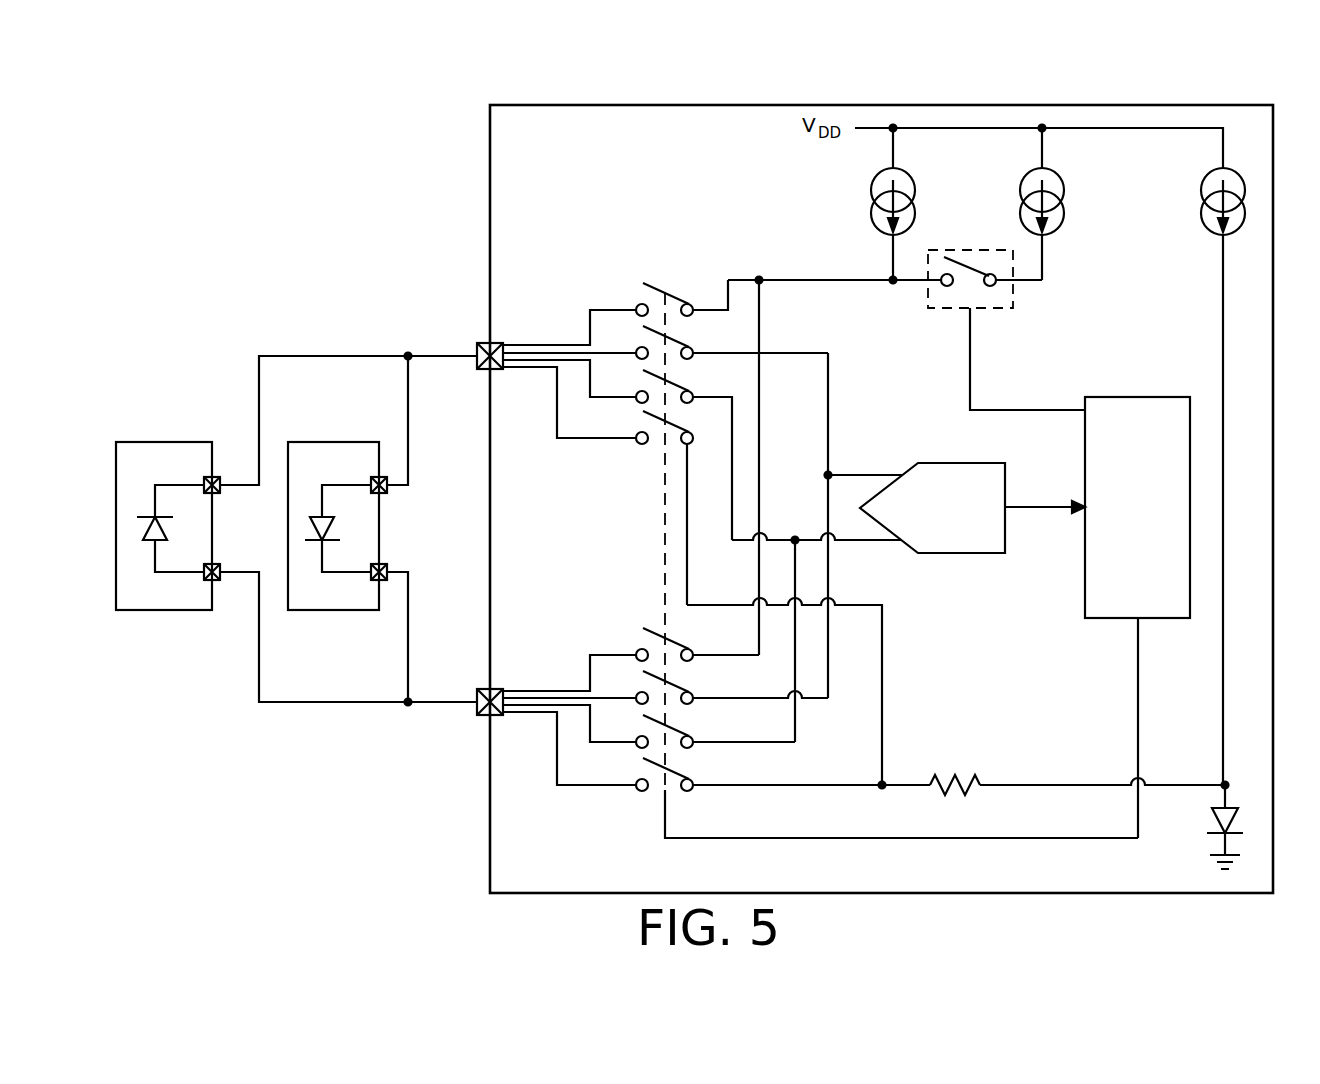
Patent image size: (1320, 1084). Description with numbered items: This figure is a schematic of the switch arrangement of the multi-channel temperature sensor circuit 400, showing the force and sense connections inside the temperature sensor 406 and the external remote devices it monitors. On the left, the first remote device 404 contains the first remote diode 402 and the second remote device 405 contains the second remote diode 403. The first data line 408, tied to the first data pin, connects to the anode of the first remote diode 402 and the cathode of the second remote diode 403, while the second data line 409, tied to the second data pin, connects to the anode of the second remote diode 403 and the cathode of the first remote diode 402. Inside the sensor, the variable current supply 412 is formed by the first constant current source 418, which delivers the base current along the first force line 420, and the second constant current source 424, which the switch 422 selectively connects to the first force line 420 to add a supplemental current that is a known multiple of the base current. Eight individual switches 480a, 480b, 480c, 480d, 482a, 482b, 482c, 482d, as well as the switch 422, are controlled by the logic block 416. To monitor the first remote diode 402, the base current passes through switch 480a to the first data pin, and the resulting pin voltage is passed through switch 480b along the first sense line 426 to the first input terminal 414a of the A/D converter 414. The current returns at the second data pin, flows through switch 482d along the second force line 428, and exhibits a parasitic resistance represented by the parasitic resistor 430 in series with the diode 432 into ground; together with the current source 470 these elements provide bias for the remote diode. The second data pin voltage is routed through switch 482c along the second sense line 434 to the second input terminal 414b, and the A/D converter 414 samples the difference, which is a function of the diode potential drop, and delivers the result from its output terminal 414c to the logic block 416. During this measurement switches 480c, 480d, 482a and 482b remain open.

The multi-channel temperature sensor circuit 400 is at (400, 137).
The first remote diode 402 is at (343, 504).
The second remote diode 403 is at (175, 504).
The first remote device 404 is at (297, 442).
The second remote device 405 is at (143, 442).
The temperature sensor 406 is at (810, 105).
The first data line 408 is at (422, 353).
The second data line 409 is at (422, 705).
The variable current supply 412 is at (883, 204).
The A/D converter 414 is at (963, 553).
The first input terminal 414a is at (902, 472).
The second input terminal 414b is at (903, 551).
The output terminal 414c is at (1015, 505).
The logic block 416 is at (1110, 397).
The first constant current source 418 is at (905, 170).
The first force line 420 is at (813, 282).
The switch 422 is at (948, 250).
The second constant current source 424 is at (1053, 170).
The first sense line 426 is at (830, 410).
The second force line 428 is at (797, 785).
The parasitic resistor 430 is at (950, 780).
The diode 432 is at (1216, 808).
The second sense line 434 is at (795, 538).
The current source 470 is at (1210, 172).
The switch 480a is at (640, 303).
The switch 480b is at (690, 346).
The switch 480c is at (690, 391).
The switch 480d is at (641, 433).
The switch 482a is at (640, 648).
The switch 482b is at (690, 692).
The switch 482c is at (690, 737).
The switch 482d is at (690, 779).